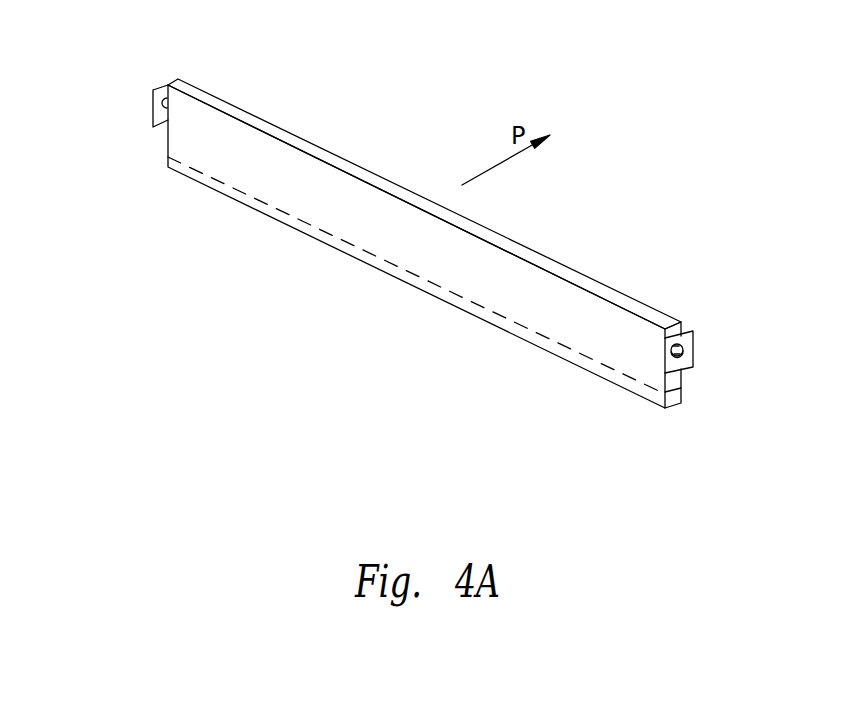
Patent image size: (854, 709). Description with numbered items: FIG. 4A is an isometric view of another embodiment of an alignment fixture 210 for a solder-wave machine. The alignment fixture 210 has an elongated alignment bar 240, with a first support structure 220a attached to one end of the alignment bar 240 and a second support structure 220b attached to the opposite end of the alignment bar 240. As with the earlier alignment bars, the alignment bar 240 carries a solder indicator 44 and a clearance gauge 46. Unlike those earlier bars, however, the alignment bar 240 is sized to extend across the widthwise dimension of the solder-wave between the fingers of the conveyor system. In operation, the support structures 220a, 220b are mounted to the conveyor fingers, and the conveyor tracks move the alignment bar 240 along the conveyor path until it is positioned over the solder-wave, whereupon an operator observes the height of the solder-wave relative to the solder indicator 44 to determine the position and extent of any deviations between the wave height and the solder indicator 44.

The alignment fixture 210 is at (419, 257).
The first support structure 220a is at (153, 117).
The second support structure 220b is at (695, 342).
The alignment bar 240 is at (553, 285).
The solder indicator 44 is at (492, 313).
The clearance gauge 46 is at (672, 408).